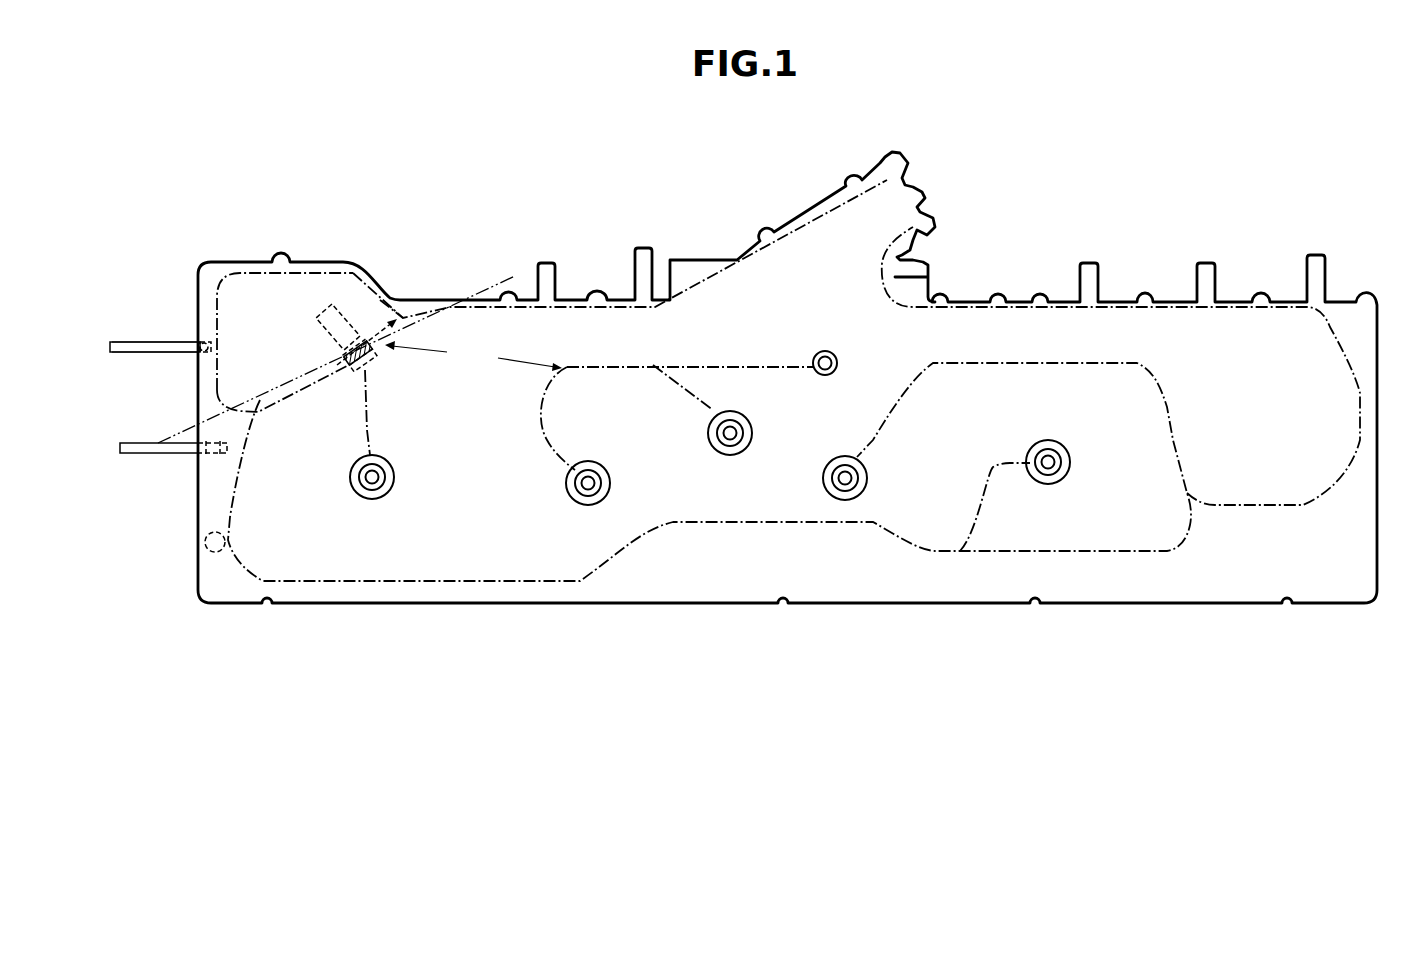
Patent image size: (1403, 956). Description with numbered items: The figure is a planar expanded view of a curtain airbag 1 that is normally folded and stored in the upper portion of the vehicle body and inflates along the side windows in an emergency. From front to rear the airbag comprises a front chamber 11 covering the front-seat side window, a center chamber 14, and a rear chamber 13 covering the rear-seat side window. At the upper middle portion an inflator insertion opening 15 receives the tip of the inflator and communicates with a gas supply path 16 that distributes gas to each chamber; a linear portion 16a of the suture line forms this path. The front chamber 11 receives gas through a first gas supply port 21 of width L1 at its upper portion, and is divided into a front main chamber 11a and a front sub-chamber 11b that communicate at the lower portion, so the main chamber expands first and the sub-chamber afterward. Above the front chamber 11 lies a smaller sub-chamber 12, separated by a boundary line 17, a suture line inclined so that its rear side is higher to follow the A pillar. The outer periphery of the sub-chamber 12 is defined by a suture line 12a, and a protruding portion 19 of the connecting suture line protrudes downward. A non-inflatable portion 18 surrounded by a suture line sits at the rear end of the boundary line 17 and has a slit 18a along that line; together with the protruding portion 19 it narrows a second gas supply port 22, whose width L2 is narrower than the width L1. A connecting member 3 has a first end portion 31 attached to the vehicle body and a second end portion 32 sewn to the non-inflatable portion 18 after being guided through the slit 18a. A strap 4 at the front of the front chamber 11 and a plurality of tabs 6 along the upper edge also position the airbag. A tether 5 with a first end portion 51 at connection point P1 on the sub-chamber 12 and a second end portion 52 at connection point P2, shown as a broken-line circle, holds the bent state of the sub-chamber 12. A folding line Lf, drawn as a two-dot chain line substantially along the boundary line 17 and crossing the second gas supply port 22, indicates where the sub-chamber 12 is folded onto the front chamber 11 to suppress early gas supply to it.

The curtain airbag 1 is at (428, 168).
The connecting member 3 is at (360, 340).
The strap 4 is at (160, 456).
The tether 5 is at (160, 338).
The tabs 6 is at (547, 262).
The front chamber 11 is at (487, 583).
The front main chamber 11a is at (490, 481).
The front sub-chamber 11b is at (318, 481).
The sub-chamber 12 is at (254, 286).
The suture line 12a is at (313, 276).
The rear chamber 13 is at (1226, 545).
The center chamber 14 is at (826, 550).
The inflator insertion opening 15 is at (877, 190).
The gas supply path 16 is at (612, 314).
The linear portion 16a is at (578, 306).
The boundary line 17 is at (296, 392).
The non-inflatable portion 18 is at (337, 361).
The slit 18a is at (371, 356).
The protruding portion 19 is at (410, 320).
The first gas supply port 21 is at (524, 349).
The second gas supply port 22 is at (391, 334).
The first end portion 31 is at (330, 310).
The second end portion 32 is at (353, 368).
The first end portion 51 is at (214, 347).
The second end portion 52 is at (116, 341).
The connection point P1 is at (203, 342).
The connection point P2 is at (205, 543).
The width L1 is at (473, 356).
The width L2 is at (367, 337).
The folding line Lf is at (186, 430).